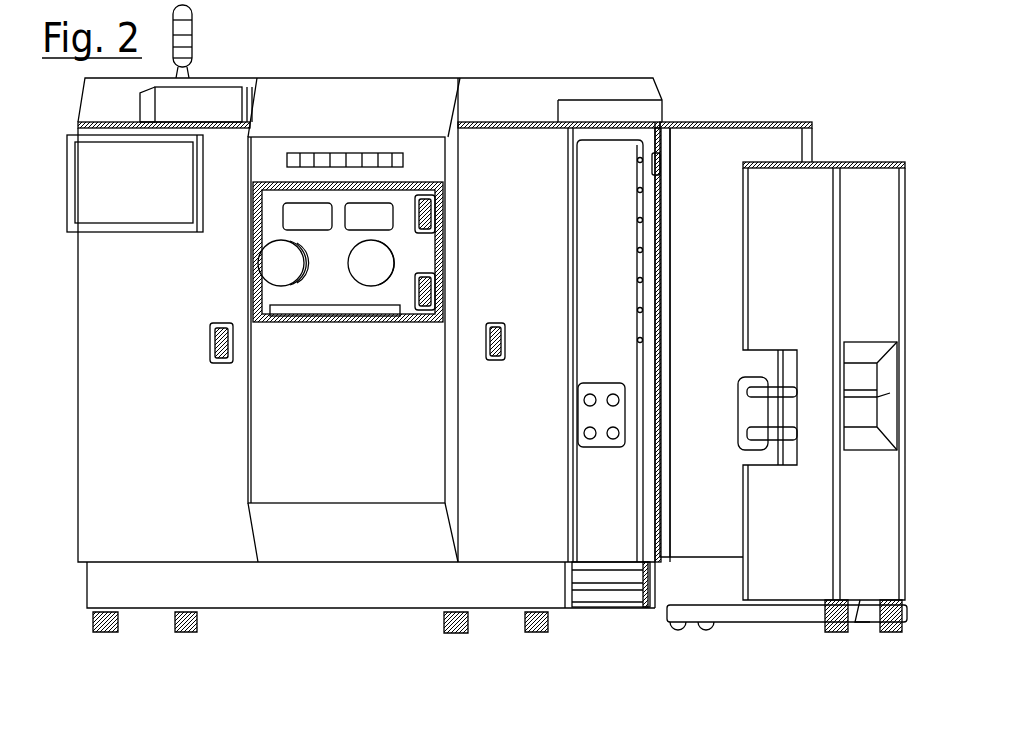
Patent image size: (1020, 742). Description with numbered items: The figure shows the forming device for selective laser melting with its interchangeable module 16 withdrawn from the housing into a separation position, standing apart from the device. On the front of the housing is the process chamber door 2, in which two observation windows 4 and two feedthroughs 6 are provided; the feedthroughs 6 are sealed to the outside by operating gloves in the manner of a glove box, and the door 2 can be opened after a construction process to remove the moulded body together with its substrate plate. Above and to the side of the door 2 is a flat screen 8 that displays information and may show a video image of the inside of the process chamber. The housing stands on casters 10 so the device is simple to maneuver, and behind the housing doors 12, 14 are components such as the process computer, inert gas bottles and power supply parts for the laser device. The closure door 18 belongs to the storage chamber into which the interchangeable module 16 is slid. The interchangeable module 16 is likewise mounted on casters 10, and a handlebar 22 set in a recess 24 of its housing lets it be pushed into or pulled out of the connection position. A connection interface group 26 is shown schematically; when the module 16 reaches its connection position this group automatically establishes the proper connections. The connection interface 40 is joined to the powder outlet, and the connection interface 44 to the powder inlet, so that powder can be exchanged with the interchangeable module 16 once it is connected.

The process chamber door 2 is at (325, 318).
The observation windows 4 is at (353, 222).
The feedthroughs 6 is at (270, 258).
The flat screen 8 is at (132, 190).
The casters 10 is at (527, 632).
The housing door 12 is at (505, 193).
The housing door 14 is at (145, 372).
The interchangeable module 16 is at (818, 203).
The closure door 18 is at (717, 165).
The handlebar 22 is at (890, 402).
The recess 24 is at (880, 353).
The connection interface group 26 is at (738, 410).
The connection interface 40 is at (587, 437).
The connection interface 44 is at (577, 393).